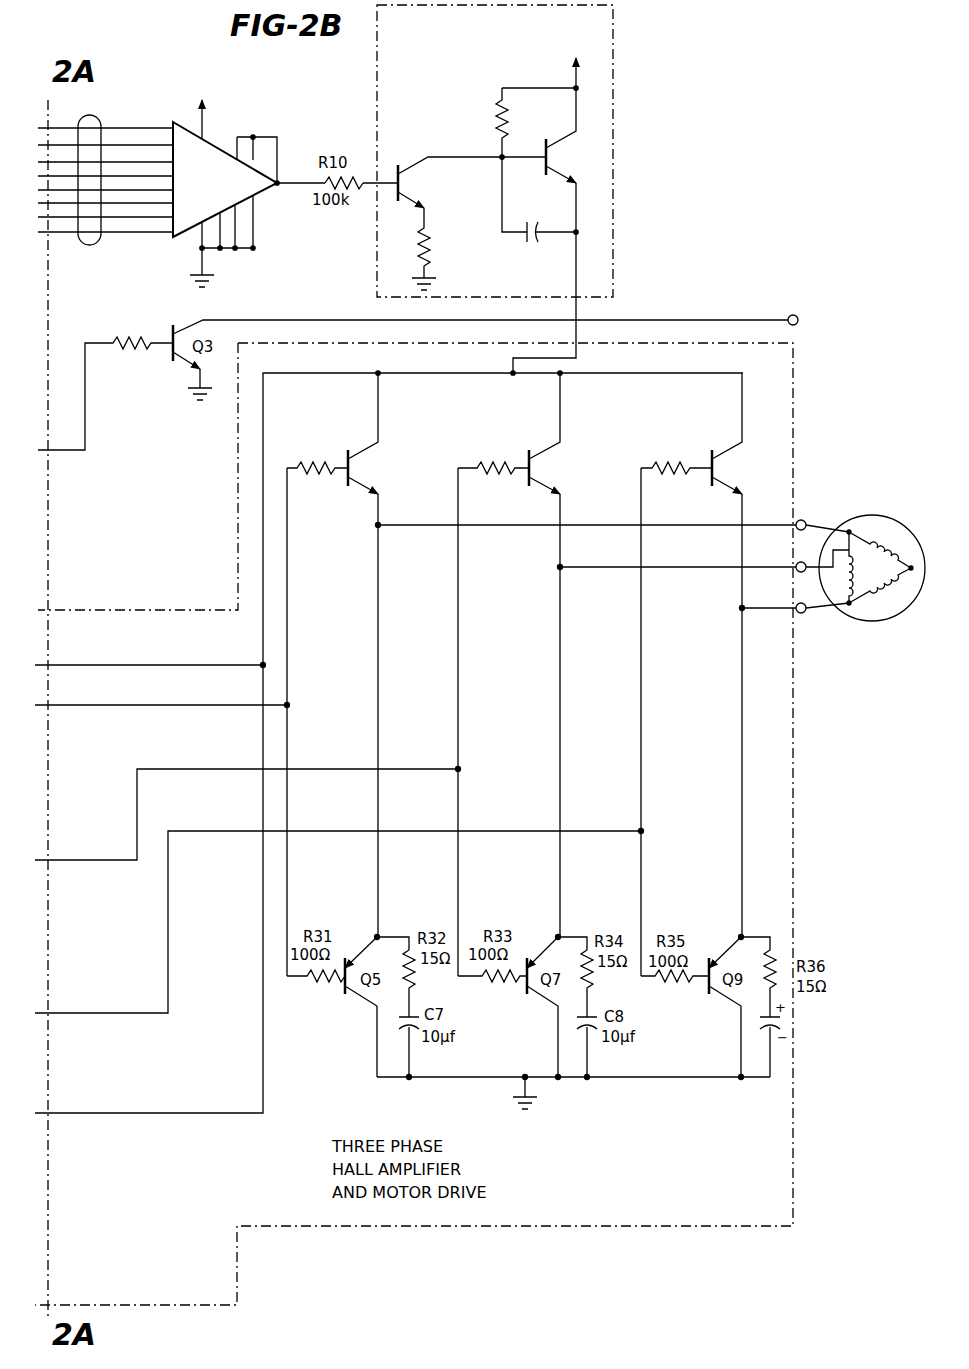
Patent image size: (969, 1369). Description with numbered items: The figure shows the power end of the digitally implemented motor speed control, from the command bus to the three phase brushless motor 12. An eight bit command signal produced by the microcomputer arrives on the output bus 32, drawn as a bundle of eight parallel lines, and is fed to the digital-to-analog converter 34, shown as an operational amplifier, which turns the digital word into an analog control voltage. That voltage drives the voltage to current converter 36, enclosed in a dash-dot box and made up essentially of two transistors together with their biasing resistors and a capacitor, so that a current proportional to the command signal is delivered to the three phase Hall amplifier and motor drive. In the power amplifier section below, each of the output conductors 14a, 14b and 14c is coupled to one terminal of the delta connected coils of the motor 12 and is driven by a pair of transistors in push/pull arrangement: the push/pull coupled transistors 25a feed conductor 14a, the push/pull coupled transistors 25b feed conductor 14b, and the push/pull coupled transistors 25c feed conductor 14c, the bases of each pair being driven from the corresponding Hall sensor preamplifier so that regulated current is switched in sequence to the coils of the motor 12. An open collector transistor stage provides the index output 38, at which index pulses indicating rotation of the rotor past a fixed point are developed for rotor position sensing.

The three phase brushless motor 12 is at (884, 516).
The output conductor 14a is at (814, 521).
The output conductor 14b is at (797, 561).
The output conductor 14c is at (808, 614).
The push/pull coupled transistor pair 25a is at (383, 452).
The push/pull coupled transistor pair 25b is at (565, 452).
The push/pull coupled transistor pair 25c is at (745, 447).
The output bus 32 is at (94, 118).
The digital-to-analog converter 34 is at (212, 146).
The voltage to current converter 36 is at (495, 151).
The index pulse output 38 is at (797, 316).